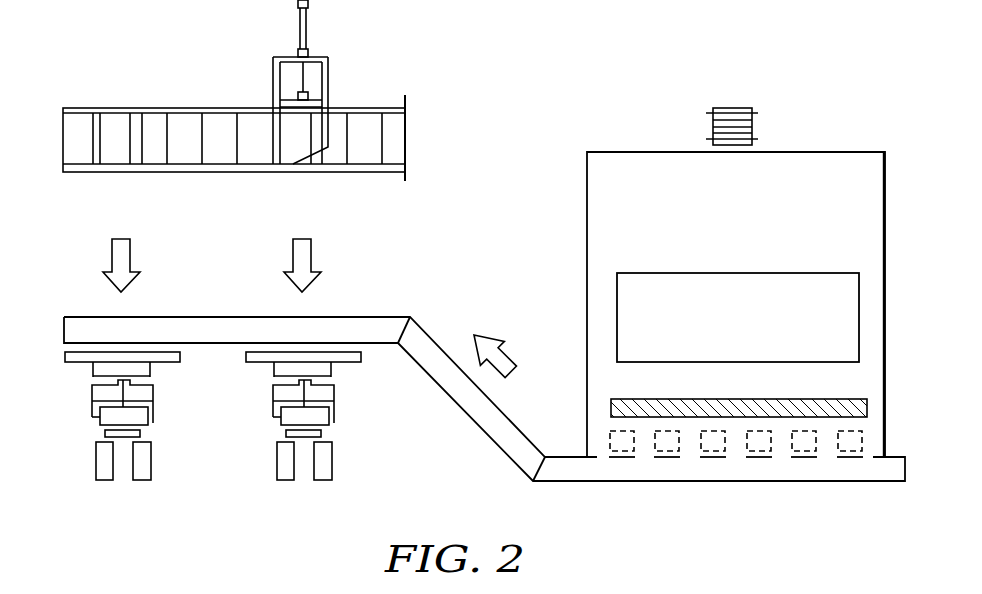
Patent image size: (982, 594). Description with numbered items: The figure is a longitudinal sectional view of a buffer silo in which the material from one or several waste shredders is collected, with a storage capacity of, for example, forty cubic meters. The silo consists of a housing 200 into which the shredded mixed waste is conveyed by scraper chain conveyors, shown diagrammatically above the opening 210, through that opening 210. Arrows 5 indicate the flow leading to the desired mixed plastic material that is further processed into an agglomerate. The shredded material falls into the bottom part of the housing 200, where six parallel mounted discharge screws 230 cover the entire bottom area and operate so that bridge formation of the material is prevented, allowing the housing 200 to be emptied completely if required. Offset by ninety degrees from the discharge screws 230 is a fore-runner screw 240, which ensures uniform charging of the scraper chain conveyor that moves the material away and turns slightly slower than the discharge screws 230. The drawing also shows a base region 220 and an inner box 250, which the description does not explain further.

The mixed plastic material flow arrow 5 is at (128, 249).
The housing 200 is at (752, 218).
The opening 210 is at (784, 152).
The base plate 220 is at (688, 458).
The discharge screws 230 is at (622, 450).
The fore-runner screw 240 is at (770, 402).
The control unit 250 is at (753, 328).